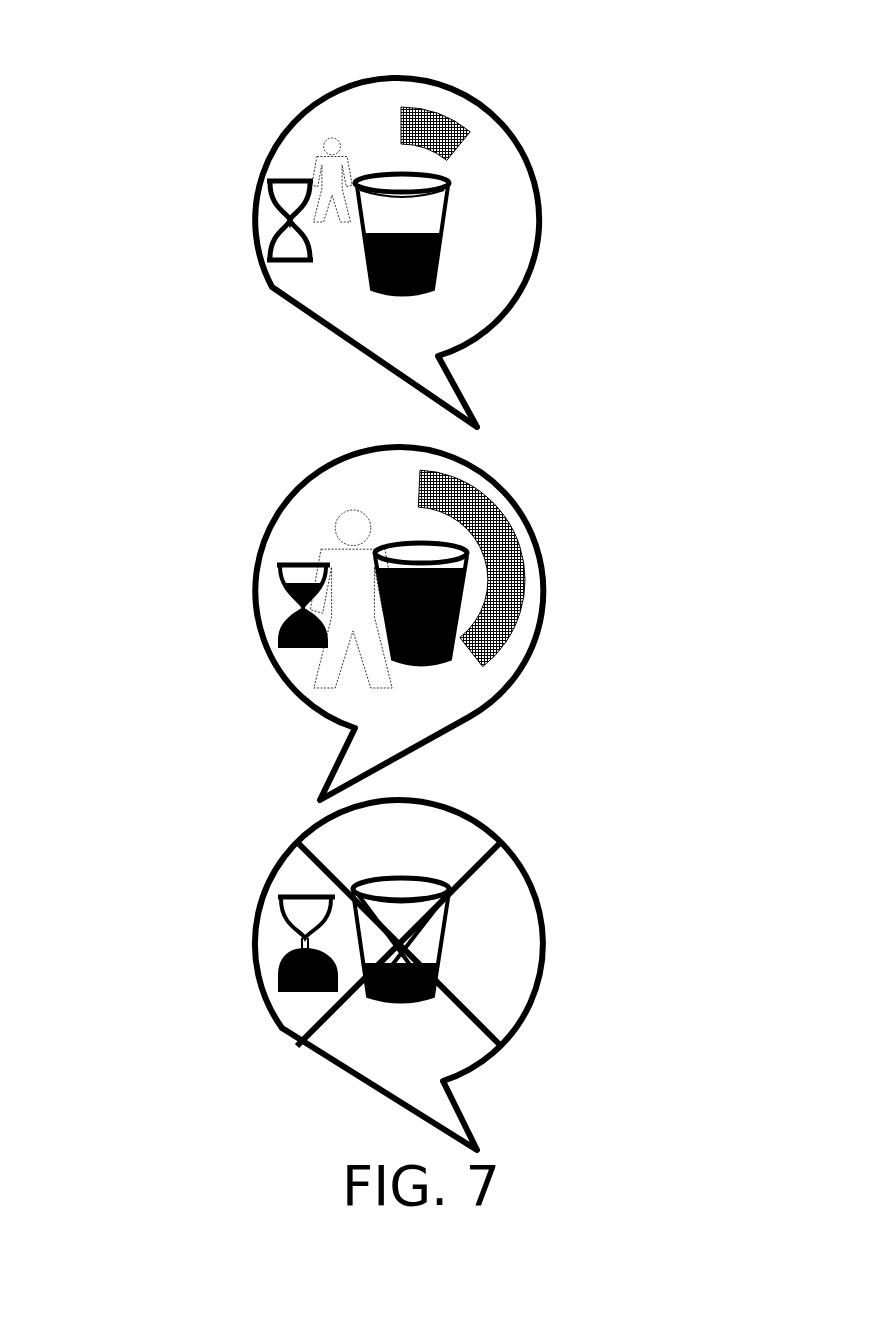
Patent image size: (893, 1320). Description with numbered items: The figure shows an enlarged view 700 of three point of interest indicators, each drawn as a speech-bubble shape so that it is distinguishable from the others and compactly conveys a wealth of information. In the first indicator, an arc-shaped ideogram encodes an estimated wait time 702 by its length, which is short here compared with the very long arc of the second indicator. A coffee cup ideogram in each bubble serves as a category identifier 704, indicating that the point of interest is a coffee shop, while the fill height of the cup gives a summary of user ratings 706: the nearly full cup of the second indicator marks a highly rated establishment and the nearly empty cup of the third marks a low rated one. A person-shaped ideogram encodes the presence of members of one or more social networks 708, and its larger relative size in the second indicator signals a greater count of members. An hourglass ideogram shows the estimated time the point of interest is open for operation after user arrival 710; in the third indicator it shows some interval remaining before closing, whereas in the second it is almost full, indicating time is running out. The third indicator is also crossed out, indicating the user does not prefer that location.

The enlarged view 700 is at (699, 53).
The estimated wait time 702 is at (443, 115).
The category identifier 704 is at (437, 287).
The summary of user ratings 706 is at (400, 233).
The presence of members of one or more social networks 708 is at (338, 562).
The estimated time the point of interest is open for operation after user arrival 710 is at (283, 987).